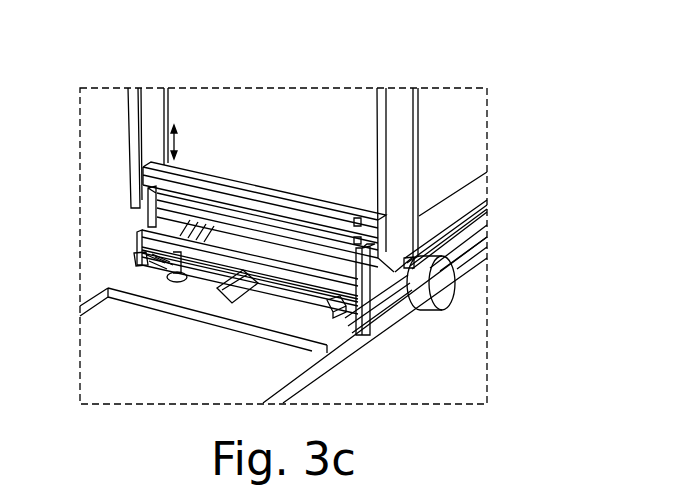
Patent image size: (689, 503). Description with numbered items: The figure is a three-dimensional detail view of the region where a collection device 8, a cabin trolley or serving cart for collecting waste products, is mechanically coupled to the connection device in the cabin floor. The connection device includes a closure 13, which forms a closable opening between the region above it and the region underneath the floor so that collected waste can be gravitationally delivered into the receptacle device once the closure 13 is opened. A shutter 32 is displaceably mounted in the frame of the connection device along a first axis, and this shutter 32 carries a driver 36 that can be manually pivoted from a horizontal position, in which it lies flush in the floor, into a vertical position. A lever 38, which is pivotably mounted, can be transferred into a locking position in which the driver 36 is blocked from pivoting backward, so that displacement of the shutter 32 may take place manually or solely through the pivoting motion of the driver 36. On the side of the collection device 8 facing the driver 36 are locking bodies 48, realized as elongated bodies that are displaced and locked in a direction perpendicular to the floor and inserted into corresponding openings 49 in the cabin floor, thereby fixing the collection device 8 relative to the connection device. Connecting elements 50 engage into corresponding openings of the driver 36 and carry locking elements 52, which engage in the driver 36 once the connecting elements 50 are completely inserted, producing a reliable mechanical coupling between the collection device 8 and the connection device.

The collection device 8 is at (399, 100).
The closure 13 is at (398, 282).
The shutter 32 is at (112, 353).
The driver 36 is at (337, 315).
The lever 38 is at (243, 284).
The locking bodies 48 is at (148, 218).
The openings 49 is at (184, 279).
The connecting elements 50 is at (138, 258).
The locking elements 52 is at (333, 297).